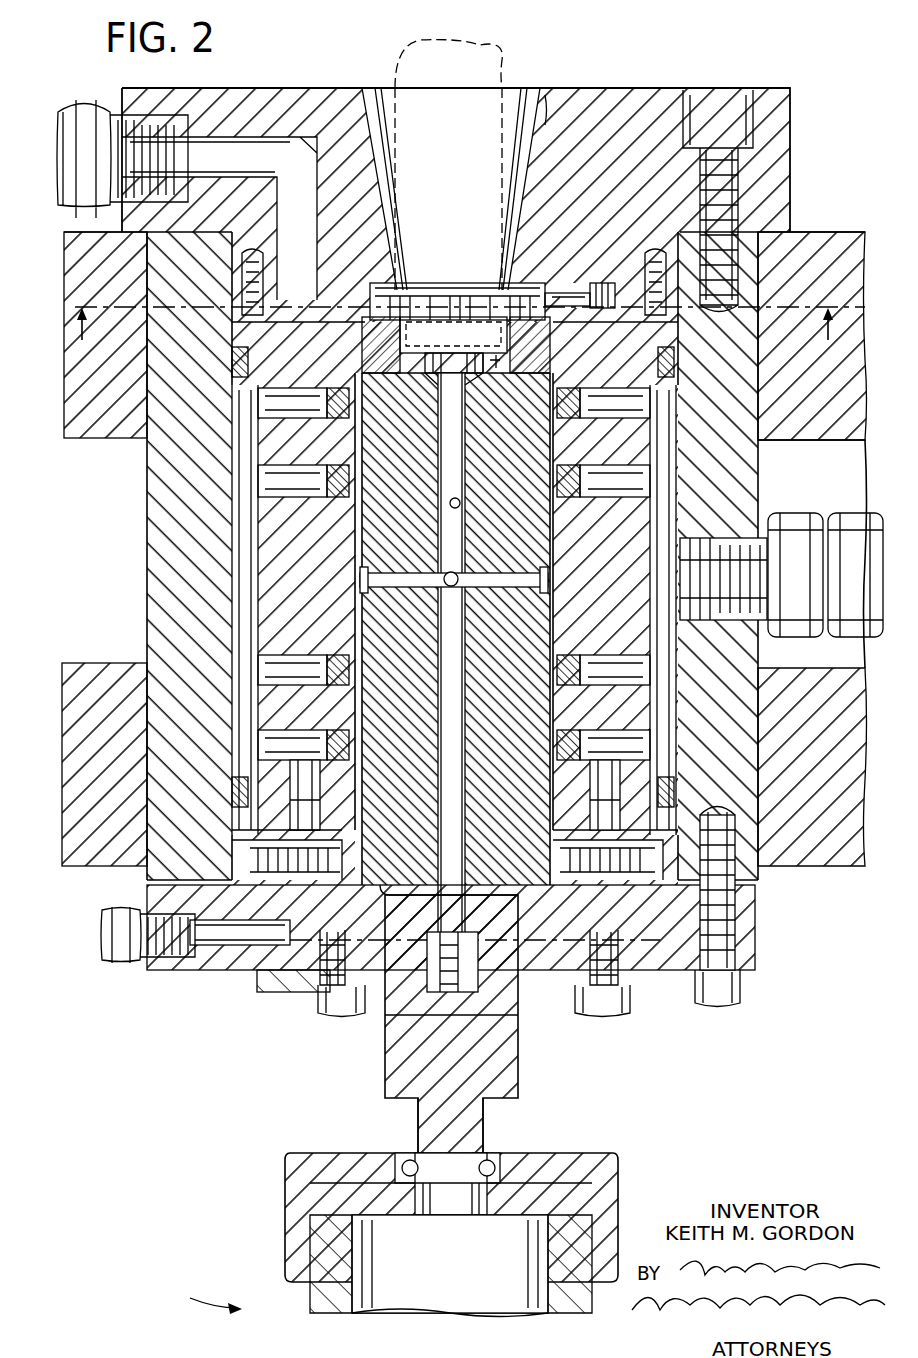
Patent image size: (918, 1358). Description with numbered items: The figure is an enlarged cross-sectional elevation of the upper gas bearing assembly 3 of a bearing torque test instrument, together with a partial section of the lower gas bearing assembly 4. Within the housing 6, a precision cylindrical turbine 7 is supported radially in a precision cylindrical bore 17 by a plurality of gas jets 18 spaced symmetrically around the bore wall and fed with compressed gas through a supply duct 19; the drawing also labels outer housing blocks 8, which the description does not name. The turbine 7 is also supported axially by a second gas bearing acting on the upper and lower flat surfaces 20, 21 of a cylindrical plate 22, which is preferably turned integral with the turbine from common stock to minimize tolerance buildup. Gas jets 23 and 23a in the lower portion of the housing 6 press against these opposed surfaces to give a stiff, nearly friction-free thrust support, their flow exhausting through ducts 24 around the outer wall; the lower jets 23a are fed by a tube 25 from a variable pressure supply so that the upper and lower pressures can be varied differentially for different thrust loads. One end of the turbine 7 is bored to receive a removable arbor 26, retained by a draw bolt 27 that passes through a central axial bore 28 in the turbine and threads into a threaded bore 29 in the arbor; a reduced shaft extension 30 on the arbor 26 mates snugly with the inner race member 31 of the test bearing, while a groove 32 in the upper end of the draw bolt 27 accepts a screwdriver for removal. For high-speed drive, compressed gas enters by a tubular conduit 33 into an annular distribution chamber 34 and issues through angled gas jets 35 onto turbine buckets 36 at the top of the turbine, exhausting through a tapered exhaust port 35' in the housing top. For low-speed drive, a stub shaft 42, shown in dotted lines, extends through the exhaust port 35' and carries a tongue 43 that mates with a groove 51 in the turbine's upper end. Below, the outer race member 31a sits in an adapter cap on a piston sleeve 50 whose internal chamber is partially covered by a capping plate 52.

The upper gas bearing assembly 3 is at (78, 553).
The lower gas bearing assembly 4 is at (469, 810).
The housing 6 is at (150, 588).
The turbine 7 is at (350, 622).
The mounting blocks 8 is at (72, 385).
The precision cylindrical bore 17 is at (545, 538).
The gas jets 18 is at (345, 470).
The supply duct 19 is at (268, 430).
The upper flat surface 20 is at (350, 808).
The lower flat surface 21 is at (578, 900).
The cylindrical plate 22 is at (605, 840).
The gas jets 23 is at (305, 795).
The lower gas jets 23a is at (285, 893).
The ducts 24 is at (728, 835).
The tube 25 is at (100, 935).
The arbor 26 is at (510, 1075).
The draw bolt 27 is at (455, 823).
The central axial bore 28 is at (460, 505).
The threaded bore 29 is at (452, 992).
The reduced shaft extension 30 is at (425, 1115).
The inner race member 31 is at (485, 1158).
The outer race member 31a is at (395, 1158).
The groove 32 is at (440, 362).
The tubular conduit 33 is at (258, 142).
The annular distribution chamber 34 is at (620, 293).
The gas jets 35 is at (567, 266).
The tapered exhaust port 35' is at (544, 89).
The turbine buckets 36 is at (505, 318).
The stub shaft 42 is at (398, 82).
The tongue 43 is at (490, 352).
The piston sleeve 50 is at (580, 1300).
The groove 51 is at (496, 357).
The capping plate 52 is at (595, 1190).